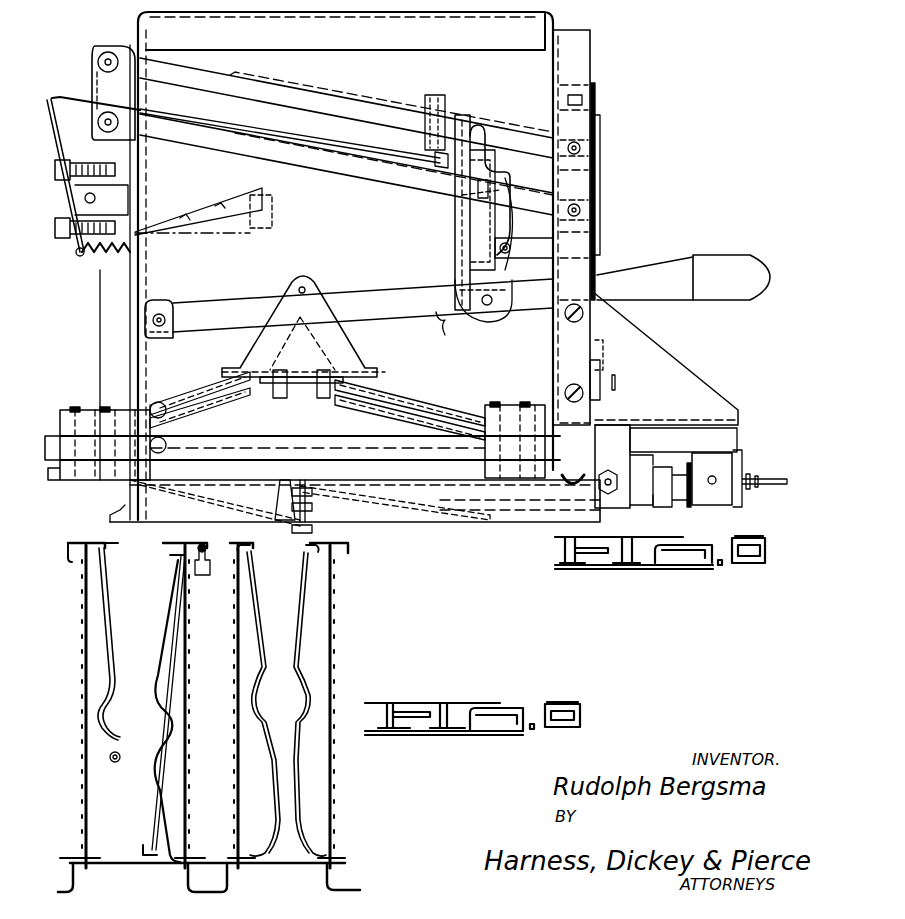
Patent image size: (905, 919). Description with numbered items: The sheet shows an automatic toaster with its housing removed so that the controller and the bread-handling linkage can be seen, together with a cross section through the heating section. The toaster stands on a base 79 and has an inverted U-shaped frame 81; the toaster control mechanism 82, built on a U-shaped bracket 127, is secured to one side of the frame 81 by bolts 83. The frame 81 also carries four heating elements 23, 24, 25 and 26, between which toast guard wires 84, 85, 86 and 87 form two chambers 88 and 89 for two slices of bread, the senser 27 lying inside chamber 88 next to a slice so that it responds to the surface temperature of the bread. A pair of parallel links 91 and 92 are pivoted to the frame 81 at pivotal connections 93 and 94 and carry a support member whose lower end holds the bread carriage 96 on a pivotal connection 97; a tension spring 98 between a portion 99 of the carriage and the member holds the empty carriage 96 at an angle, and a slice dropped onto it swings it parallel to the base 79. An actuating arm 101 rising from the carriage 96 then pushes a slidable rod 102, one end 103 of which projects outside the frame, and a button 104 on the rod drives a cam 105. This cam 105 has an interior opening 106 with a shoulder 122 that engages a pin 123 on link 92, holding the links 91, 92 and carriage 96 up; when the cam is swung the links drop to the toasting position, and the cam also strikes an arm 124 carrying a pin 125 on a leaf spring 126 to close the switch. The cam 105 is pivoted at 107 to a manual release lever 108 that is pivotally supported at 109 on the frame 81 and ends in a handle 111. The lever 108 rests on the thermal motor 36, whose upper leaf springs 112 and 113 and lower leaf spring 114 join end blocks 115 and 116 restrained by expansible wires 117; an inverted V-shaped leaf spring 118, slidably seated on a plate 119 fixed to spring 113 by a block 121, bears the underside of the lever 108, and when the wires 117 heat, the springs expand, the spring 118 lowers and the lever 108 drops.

In FIG. 8, the frame 81 is at (590, 68).
In FIG. 9, the frame 81 is at (74, 552).
In FIG. 8, the toaster control mechanism 82 is at (690, 362).
In FIG. 8, the bolts 83 is at (584, 310).
In FIG. 8, the base 79 is at (500, 520).
In FIG. 8, the link 91 is at (330, 86).
In FIG. 8, the link 92 is at (318, 160).
In FIG. 8, the pivotal connection 93 is at (100, 75).
In FIG. 8, the pivotal connection 94 is at (580, 208).
In FIG. 8, the bread carriage 96 is at (262, 220).
In FIG. 8, the pivotal connection 97 is at (78, 203).
In FIG. 8, the tension spring 98 is at (92, 260).
In FIG. 8, the portion of the carriage 99 is at (76, 255).
In FIG. 8, the actuating arm 101 is at (62, 140).
In FIG. 8, the slidable rod 102 is at (205, 125).
In FIG. 8, the end of rod 103 is at (75, 100).
In FIG. 8, the button 104 is at (437, 140).
In FIG. 8, the cam 105 is at (455, 228).
In FIG. 8, the interior opening 106 is at (470, 255).
In FIG. 8, the pivot 107 is at (492, 304).
In FIG. 8, the manual release lever 108 is at (457, 330).
In FIG. 8, the pivotal support 109 is at (175, 305).
In FIG. 8, the handle 111 is at (722, 262).
In FIG. 8, the upper leaf spring 112 is at (202, 370).
In FIG. 8, the upper leaf spring 113 is at (235, 410).
In FIG. 8, the lower leaf spring 114 is at (240, 513).
In FIG. 8, the end block 115 is at (80, 482).
In FIG. 8, the end block 116 is at (510, 480).
In FIG. 8, the expansible wires 117 is at (345, 450).
In FIG. 8, the leaf spring of inverted V-shape 118 is at (345, 340).
In FIG. 8, the plate 119 is at (375, 385).
In FIG. 8, the block 121 is at (290, 397).
In FIG. 8, the shoulder 122 is at (455, 195).
In FIG. 8, the pin 123 is at (500, 172).
In FIG. 8, the arm 124 is at (540, 242).
In FIG. 8, the pin 125 is at (508, 253).
In FIG. 8, the leaf spring 126 is at (598, 212).
In FIG. 8, the U-shaped bracket 127 is at (700, 395).
In FIG. 8, the thermal motor 36 is at (410, 390).
In FIG. 9, the heating element 23 is at (84, 644).
In FIG. 9, the heating element 24 is at (190, 617).
In FIG. 9, the heating element 25 is at (236, 695).
In FIG. 9, the heating element 26 is at (333, 650).
In FIG. 9, the senser 27 is at (115, 762).
In FIG. 9, the toast guard wire 84 is at (110, 618).
In FIG. 9, the toast guard wire 85 is at (168, 700).
In FIG. 9, the toast guard wire 86 is at (262, 600).
In FIG. 9, the toast guard wire 87 is at (310, 652).
In FIG. 9, the chamber 88 is at (145, 589).
In FIG. 9, the chamber 89 is at (300, 580).